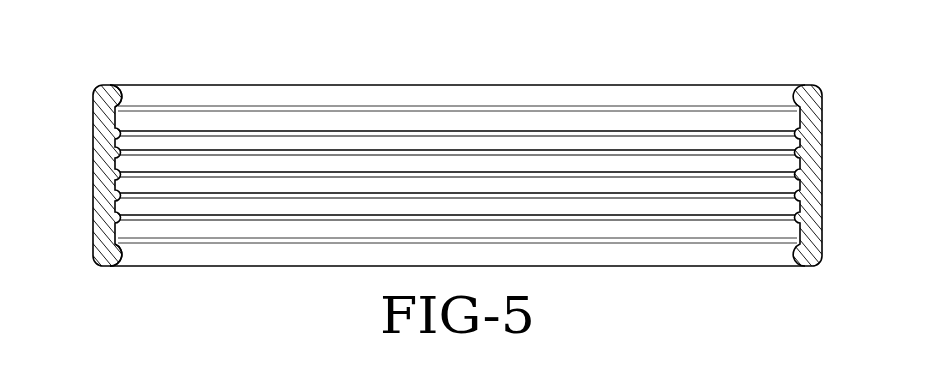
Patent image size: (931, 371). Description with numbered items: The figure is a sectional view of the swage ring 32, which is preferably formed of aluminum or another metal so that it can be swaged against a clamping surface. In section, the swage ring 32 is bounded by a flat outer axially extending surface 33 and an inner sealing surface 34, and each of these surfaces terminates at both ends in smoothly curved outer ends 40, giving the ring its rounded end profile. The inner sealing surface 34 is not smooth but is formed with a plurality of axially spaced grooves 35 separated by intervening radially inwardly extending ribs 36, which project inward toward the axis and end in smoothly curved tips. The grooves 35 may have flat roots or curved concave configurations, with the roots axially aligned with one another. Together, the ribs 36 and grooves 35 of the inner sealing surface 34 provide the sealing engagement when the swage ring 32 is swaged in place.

The swage ring 32 is at (578, 85).
The flat outer axially extending surface 33 is at (93, 171).
The inner sealing surface 34 is at (738, 238).
The grooves 35 is at (327, 143).
The ribs 36 is at (257, 130).
The outer ends 40 is at (108, 86).